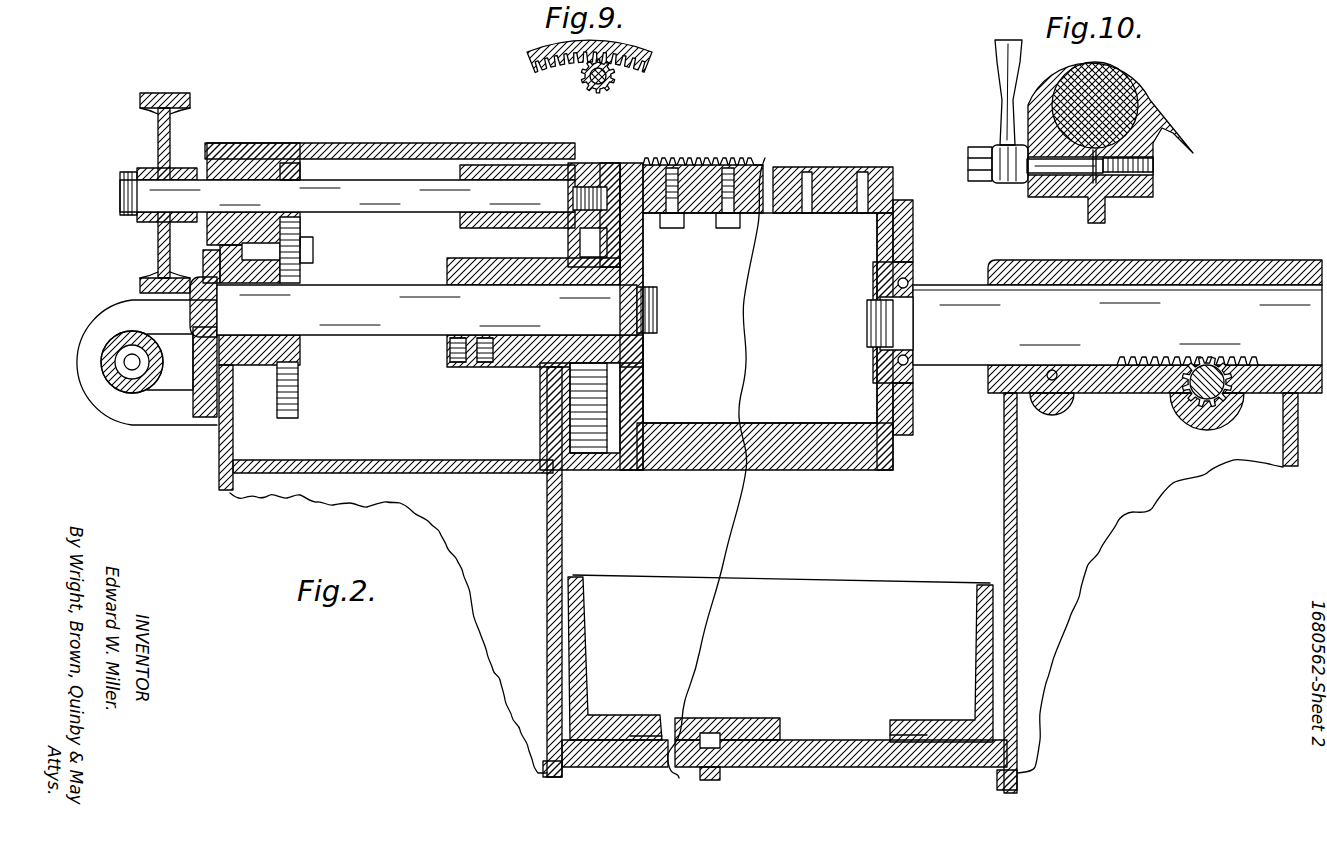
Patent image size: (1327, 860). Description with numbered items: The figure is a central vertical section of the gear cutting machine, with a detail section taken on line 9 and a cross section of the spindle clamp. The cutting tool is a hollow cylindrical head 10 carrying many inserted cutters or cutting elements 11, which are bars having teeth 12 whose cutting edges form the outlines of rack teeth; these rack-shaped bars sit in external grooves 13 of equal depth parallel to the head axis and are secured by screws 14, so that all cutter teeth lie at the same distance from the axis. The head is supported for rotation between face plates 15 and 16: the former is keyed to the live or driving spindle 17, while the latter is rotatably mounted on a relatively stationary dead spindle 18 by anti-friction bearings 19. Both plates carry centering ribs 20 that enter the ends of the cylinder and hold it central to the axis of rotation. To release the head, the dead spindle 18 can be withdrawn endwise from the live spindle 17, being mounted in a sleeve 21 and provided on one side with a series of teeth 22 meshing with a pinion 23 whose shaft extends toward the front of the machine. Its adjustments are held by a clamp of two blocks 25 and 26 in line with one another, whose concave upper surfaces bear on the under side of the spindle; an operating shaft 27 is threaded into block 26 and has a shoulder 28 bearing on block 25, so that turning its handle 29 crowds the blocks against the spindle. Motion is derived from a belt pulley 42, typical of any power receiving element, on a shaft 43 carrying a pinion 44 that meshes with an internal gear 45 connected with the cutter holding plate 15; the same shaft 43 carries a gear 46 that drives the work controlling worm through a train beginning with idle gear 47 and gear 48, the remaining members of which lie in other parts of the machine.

In FIG. 2, the section line 9— 9 is at (597, 226).
In FIG. 2, the cylindrical head 10 is at (775, 182).
In FIG. 2, the cutters or cutting elements 11 is at (722, 165).
In FIG. 2, the teeth 12 is at (660, 162).
In FIG. 2, the external grooves 13 is at (862, 175).
In FIG. 2, the screws 14 is at (730, 215).
In FIG. 2, the face plate 15 is at (642, 378).
In FIG. 2, the face plate 16 is at (887, 412).
In FIG. 2, the shaft 17 is at (428, 318).
In FIG. 2, the dead spindle 18 is at (948, 300).
In FIG. 10, the dead spindle 18 is at (1122, 108).
In FIG. 2, the anti-friction bearings 19 is at (897, 284).
In FIG. 2, the centering ribs 20 is at (885, 226).
In FIG. 2, the sleeve 21 is at (1143, 270).
In FIG. 10, the sleeve 21 is at (1132, 72).
In FIG. 2, the teeth 22 is at (1150, 368).
In FIG. 2, the pinion 23 is at (1210, 390).
In FIG. 10, the block 25 is at (1063, 197).
In FIG. 10, the block 26 is at (1127, 203).
In FIG. 10, the operating shaft 27 is at (1060, 180).
In FIG. 10, the shoulder 28 is at (1023, 192).
In FIG. 10, the handle 29 is at (1007, 87).
In FIG. 2, the belt pulley 42 is at (150, 92).
In FIG. 2, the shaft 43 is at (365, 190).
In FIG. 9, the shaft 43 is at (590, 79).
In FIG. 2, the pinion 44 is at (590, 212).
In FIG. 9, the pinion 44 is at (590, 88).
In FIG. 2, the internal gear 45 is at (612, 170).
In FIG. 9, the internal gear 45 is at (622, 52).
In FIG. 2, the gear 46 is at (290, 168).
In FIG. 2, the idle gear 47 is at (302, 246).
In FIG. 2, the gear 48 is at (300, 388).